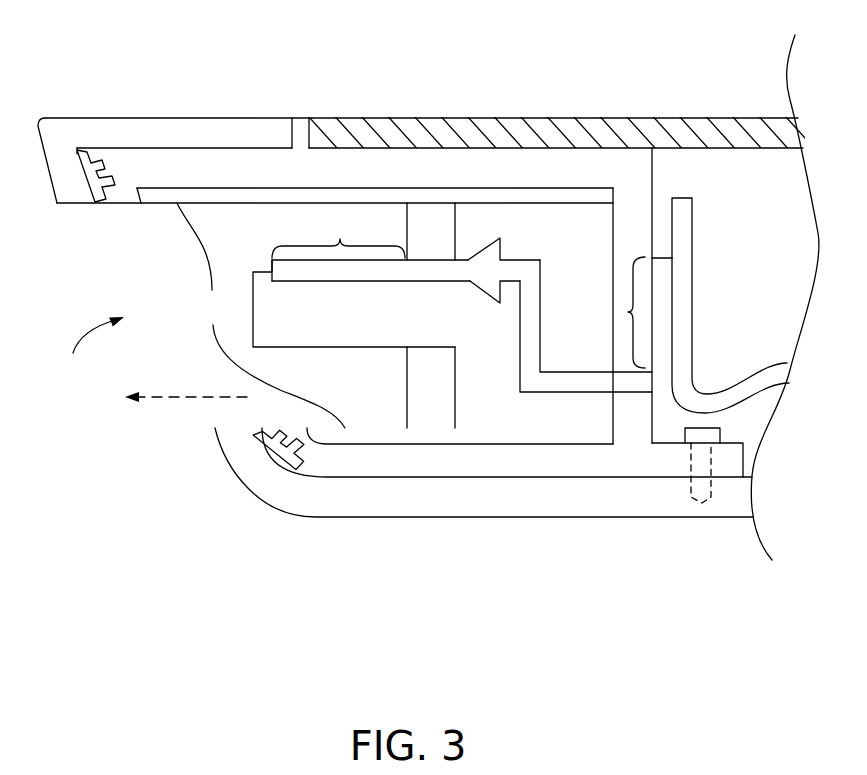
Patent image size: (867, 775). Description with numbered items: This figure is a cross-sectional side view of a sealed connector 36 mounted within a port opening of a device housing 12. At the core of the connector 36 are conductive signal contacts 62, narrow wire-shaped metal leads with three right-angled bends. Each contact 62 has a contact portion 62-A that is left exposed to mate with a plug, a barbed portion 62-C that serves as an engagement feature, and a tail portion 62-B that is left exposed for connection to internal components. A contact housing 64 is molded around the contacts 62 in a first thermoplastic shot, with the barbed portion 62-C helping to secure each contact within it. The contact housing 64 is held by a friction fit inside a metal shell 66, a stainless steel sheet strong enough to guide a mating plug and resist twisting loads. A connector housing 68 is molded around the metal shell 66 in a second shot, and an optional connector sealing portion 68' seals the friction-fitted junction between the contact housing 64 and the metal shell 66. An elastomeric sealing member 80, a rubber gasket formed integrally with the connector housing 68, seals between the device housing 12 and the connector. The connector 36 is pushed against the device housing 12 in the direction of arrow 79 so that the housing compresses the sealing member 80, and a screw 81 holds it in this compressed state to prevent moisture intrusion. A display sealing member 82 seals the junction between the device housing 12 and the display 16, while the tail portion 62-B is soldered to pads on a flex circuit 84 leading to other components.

The device housing 12 is at (187, 128).
The display 16 is at (700, 128).
The sealed connector 36 is at (91, 351).
The conductive signal contacts 62 is at (462, 273).
The contact portion 62-A is at (371, 245).
The tail portion 62-B is at (628, 312).
The barbed portion 62-C is at (487, 247).
The contact housing 64 is at (560, 253).
The metal shell 66 is at (261, 315).
The connector housing 68 is at (440, 310).
The connector sealing portion 68' is at (406, 359).
The arrow 79 is at (178, 397).
The elastomeric sealing member 80 is at (88, 187).
The screw 81 is at (702, 500).
The display sealing member 82 is at (300, 130).
The flex circuit 84 is at (735, 388).